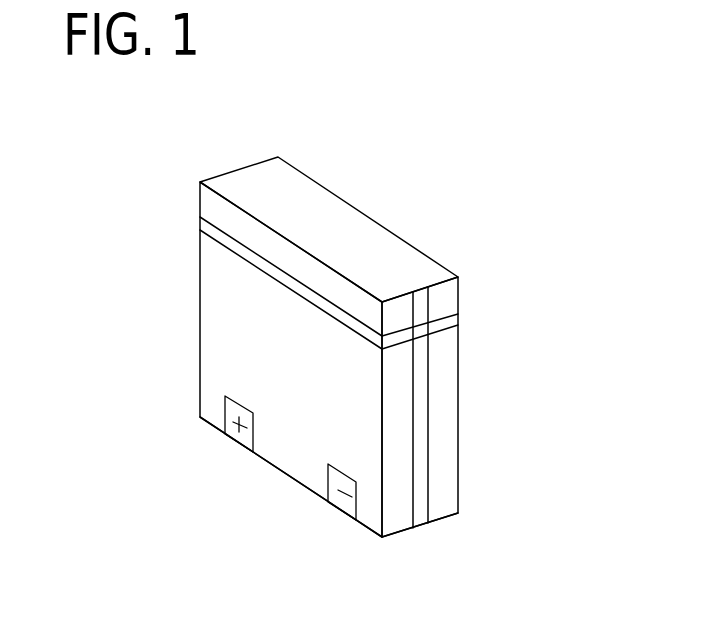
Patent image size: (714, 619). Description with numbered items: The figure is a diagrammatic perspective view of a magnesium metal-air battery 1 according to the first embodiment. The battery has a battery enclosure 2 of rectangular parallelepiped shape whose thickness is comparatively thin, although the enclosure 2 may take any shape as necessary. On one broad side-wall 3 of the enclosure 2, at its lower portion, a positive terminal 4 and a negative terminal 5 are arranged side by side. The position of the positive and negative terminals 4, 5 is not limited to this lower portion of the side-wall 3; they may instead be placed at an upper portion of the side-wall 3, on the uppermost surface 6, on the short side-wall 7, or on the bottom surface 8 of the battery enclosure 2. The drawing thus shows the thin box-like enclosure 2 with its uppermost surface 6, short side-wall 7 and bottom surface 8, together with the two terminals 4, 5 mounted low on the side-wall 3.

The magnesium metal-air battery 1 is at (372, 181).
The battery enclosure 2 is at (460, 350).
The side-wall 3 is at (217, 312).
The positive terminal 4 is at (232, 435).
The negative terminal 5 is at (337, 502).
The uppermost surface 6 is at (395, 252).
The short side-wall 7 is at (445, 415).
The bottom surface 8 is at (443, 518).